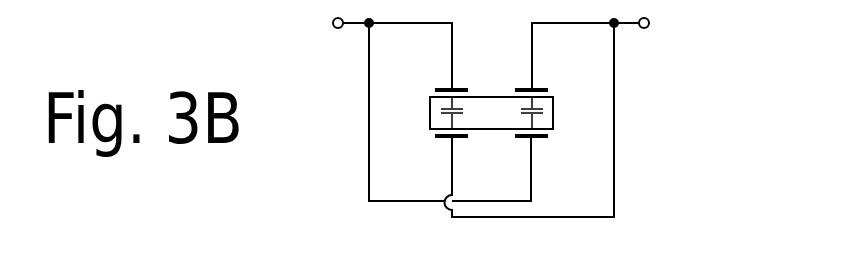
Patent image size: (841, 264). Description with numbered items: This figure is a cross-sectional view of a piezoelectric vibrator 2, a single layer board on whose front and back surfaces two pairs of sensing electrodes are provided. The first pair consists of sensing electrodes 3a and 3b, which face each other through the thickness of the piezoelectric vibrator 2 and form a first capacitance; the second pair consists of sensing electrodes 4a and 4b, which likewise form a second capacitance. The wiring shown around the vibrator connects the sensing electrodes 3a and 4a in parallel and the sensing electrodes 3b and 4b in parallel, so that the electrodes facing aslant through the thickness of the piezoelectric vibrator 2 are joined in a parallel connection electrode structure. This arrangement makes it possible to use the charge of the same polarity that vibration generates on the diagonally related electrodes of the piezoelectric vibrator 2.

The piezoelectric vibrator 2 is at (492, 130).
The sensing electrode 3a is at (443, 88).
The sensing electrode 3b is at (443, 140).
The sensing electrode 4a is at (543, 140).
The sensing electrode 4b is at (546, 88).